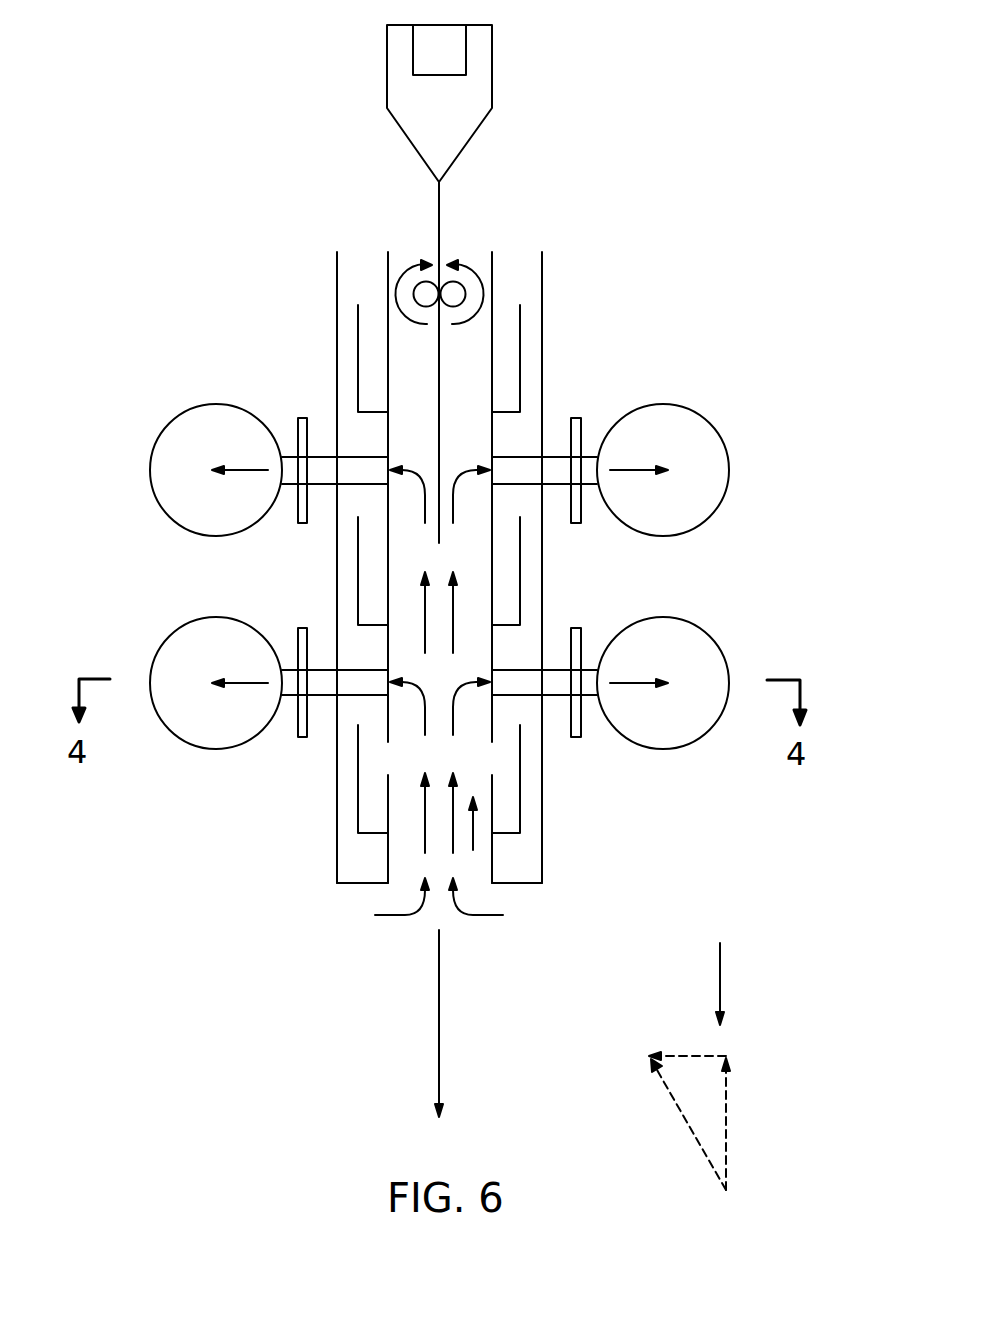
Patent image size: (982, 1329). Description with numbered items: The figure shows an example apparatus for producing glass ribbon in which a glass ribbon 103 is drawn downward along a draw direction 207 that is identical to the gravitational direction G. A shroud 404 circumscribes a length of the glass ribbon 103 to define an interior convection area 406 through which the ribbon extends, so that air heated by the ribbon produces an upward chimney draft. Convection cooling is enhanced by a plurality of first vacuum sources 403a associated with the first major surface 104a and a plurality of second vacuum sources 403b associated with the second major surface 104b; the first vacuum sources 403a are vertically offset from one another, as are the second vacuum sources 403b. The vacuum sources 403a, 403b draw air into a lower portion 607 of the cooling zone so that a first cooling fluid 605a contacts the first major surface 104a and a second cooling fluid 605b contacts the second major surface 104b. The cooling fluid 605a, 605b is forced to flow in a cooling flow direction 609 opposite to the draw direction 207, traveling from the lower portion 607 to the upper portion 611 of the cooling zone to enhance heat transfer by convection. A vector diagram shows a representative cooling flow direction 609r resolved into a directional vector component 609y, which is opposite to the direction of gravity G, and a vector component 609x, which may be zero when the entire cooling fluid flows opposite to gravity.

The glass ribbon 103 is at (440, 238).
The first major surface 104a is at (446, 195).
The second major surface 104b is at (432, 208).
The shroud 404 is at (542, 296).
The first vacuum source 403a is at (715, 410).
The second vacuum source 403b is at (165, 410).
The first cooling fluid 605a is at (638, 683).
The second cooling fluid 605b is at (243, 470).
The upper portion of the cooling zone 611 is at (482, 432).
The interior convection area 406 is at (480, 545).
The cooling flow direction 609 is at (473, 850).
The lower portion of the cooling zone 607 is at (358, 900).
The draw direction 207 is at (439, 1023).
The gravitational direction G is at (720, 978).
The vector component 609x is at (683, 1055).
The directional vector component 609y is at (728, 1103).
The representative cooling flow direction 609r is at (672, 1098).